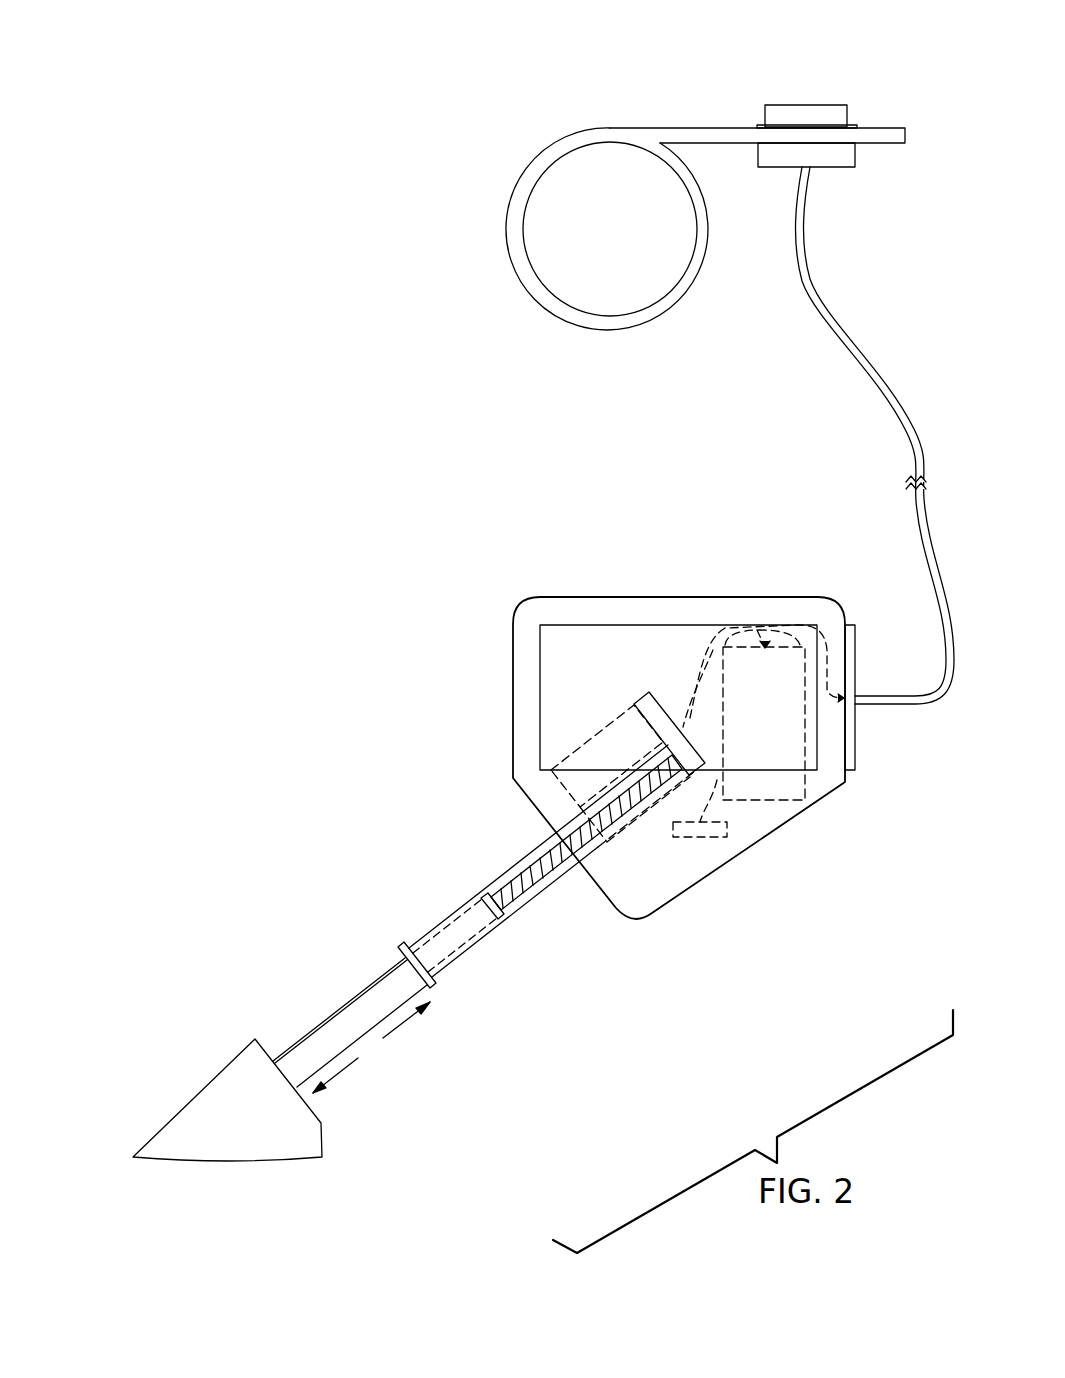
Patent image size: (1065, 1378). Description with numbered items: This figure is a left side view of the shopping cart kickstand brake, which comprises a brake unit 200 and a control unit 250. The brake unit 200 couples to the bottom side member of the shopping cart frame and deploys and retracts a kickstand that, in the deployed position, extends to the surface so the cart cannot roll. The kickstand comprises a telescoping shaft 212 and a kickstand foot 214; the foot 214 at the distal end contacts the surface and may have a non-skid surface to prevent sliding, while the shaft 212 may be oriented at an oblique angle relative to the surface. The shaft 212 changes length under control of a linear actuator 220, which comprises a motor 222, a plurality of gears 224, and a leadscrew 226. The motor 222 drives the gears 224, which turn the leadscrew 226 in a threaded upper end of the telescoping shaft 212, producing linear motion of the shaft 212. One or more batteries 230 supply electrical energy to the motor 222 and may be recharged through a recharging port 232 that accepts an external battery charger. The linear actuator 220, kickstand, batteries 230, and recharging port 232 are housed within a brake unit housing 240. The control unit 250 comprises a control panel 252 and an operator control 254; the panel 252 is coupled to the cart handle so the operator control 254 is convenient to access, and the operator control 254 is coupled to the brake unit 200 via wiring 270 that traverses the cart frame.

The brake unit 200 is at (45, 1092).
The telescoping shaft 212 is at (352, 995).
The kickstand foot 214 is at (213, 1143).
The linear actuator 220 is at (522, 600).
The motor 222 is at (613, 737).
The plurality of gears 224 is at (647, 707).
The leadscrew 226 is at (578, 880).
The one or more batteries 230 is at (805, 787).
The recharging port 232 is at (700, 840).
The brake unit housing 240 is at (657, 913).
The control unit 250 is at (895, 62).
The control panel 252 is at (511, 222).
The operator control 254 is at (803, 113).
The wiring 270 is at (838, 331).